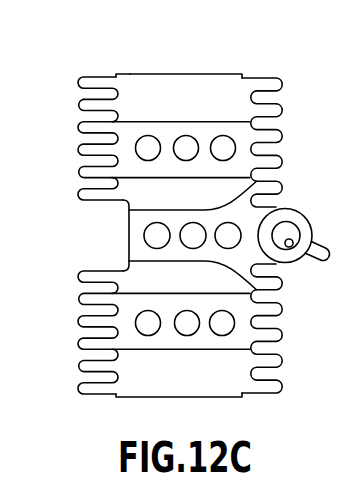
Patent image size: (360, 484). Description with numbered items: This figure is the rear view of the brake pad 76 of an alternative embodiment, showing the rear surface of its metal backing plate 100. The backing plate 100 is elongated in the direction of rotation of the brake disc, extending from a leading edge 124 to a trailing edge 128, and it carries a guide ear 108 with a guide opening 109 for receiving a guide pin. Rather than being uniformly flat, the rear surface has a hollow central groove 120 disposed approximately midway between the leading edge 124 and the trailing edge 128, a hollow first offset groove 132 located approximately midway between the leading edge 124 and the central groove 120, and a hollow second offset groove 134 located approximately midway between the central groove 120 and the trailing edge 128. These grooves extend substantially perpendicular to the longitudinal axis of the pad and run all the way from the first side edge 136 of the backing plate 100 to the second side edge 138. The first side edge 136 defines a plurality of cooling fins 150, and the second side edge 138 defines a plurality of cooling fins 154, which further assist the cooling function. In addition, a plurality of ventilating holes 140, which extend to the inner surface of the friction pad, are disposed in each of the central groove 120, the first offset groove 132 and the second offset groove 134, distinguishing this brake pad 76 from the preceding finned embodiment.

The brake pad 76 is at (166, 218).
The metal backing plate 100 is at (128, 74).
The trailing edge 128 is at (197, 72).
The leading edge 124 is at (222, 399).
The cooling fins 150 is at (80, 104).
The first side edge 136 is at (67, 113).
The second offset groove 134 is at (127, 150).
The first offset groove 132 is at (117, 342).
The central groove 120 is at (136, 250).
The cooling fins 154 is at (283, 101).
The second side edge 138 is at (286, 124).
The guide ear 108 is at (298, 221).
The guide opening 109 is at (290, 247).
The ventilating holes 140 is at (150, 135).